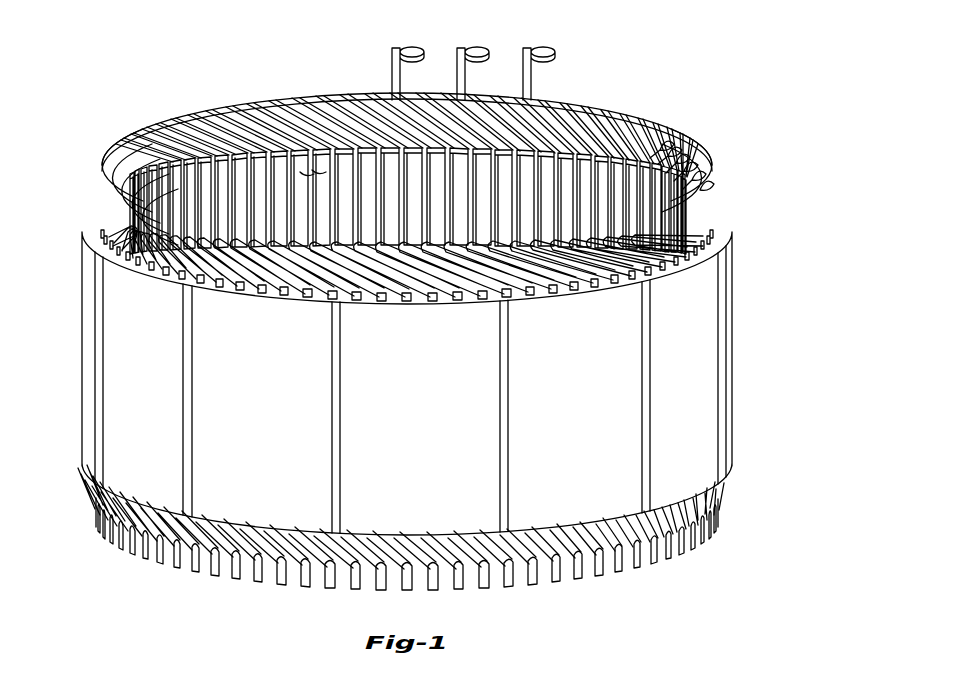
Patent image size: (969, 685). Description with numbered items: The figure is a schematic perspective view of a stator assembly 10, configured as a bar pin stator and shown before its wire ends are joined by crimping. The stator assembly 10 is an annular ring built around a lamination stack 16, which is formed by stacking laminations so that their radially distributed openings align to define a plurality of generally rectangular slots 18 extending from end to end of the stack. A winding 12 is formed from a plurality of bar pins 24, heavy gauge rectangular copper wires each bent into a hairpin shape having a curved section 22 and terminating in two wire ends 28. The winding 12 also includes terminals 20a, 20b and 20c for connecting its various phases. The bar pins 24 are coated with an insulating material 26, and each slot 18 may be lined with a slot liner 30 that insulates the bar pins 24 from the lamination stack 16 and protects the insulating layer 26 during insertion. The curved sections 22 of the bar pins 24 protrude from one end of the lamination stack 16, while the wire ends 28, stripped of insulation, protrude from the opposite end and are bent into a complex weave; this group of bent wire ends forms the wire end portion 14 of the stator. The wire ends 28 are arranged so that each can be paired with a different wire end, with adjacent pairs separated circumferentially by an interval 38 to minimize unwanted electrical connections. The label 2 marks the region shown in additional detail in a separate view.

The stator assembly 10 is at (88, 138).
The winding 12 is at (196, 112).
The wire end portion 14 is at (88, 518).
The lamination stack 16 is at (82, 346).
The slots 18 is at (312, 170).
The terminal 20a is at (428, 48).
The terminal 20b is at (493, 48).
The terminal 20c is at (560, 48).
The curved section 22 is at (705, 196).
The bar pins 24 is at (672, 150).
The insulating material 26 is at (182, 545).
The wire ends 28 is at (258, 579).
The slot liner 30 is at (243, 292).
The circumferential interval 38 is at (468, 592).
The section view line for FIG. 2 is at (637, 572).